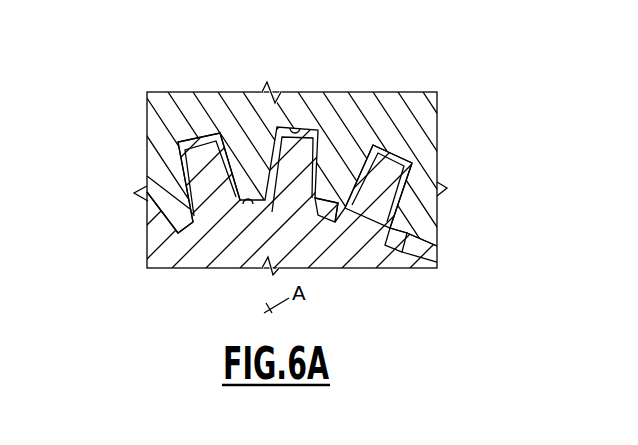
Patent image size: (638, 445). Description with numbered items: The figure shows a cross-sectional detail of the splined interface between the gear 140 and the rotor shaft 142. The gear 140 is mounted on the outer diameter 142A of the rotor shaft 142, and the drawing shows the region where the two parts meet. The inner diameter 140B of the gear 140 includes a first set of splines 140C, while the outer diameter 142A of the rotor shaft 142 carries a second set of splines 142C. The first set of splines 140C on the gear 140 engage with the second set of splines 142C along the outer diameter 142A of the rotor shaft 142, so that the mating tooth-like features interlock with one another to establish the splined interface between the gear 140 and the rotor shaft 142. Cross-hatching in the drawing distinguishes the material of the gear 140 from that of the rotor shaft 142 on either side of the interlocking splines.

The gear 140 is at (252, 121).
The inner diameter 140B is at (297, 126).
The first set of splines 140C is at (160, 204).
The rotor shaft 142 is at (362, 258).
The outer diameter 142A is at (243, 207).
The second set of splines 142C is at (200, 158).